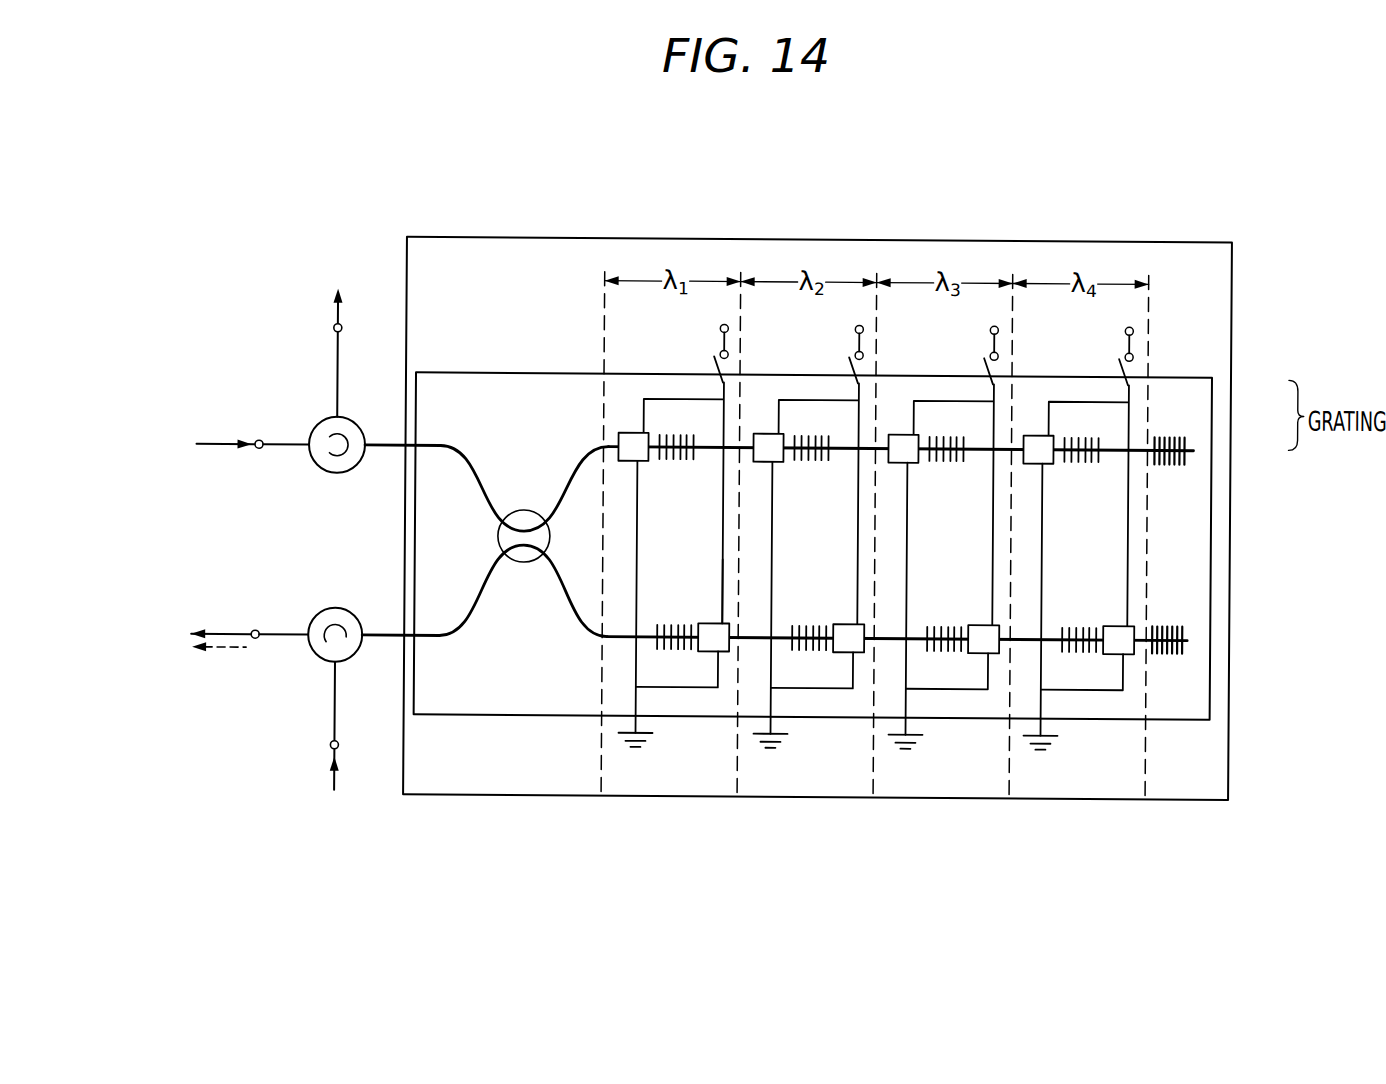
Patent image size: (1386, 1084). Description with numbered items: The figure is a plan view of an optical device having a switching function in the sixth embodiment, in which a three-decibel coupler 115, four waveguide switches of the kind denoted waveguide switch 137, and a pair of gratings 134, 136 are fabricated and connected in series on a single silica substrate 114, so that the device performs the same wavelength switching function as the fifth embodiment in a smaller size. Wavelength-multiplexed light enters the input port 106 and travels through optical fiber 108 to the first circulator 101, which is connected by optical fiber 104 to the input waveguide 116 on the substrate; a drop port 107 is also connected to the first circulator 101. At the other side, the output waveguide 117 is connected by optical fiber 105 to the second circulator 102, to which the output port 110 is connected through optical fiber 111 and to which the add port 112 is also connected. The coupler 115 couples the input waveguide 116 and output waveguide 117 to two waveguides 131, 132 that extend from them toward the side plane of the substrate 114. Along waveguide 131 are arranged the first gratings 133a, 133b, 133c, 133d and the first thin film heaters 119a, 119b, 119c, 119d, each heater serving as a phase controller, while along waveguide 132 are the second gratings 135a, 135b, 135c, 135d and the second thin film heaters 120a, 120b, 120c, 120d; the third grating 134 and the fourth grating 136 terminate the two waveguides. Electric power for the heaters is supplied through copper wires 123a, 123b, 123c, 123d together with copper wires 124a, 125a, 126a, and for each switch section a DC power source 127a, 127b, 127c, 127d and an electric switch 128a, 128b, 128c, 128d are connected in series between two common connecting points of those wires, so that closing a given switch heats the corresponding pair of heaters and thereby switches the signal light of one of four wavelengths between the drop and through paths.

The first circulator 101 is at (314, 457).
The second circulator 102 is at (322, 661).
The optical fiber 104 is at (383, 446).
The optical fiber 105 is at (373, 643).
The input port 106 is at (257, 444).
The drop port 107 is at (333, 329).
The optical fiber 108 is at (290, 446).
The output port 110 is at (255, 634).
The optical fiber 111 is at (288, 638).
The add port 112 is at (333, 751).
The SiO2 substrate 114 is at (515, 696).
The 3 dB coupler 115 is at (520, 511).
The input waveguide 116 is at (446, 446).
The output waveguide 117 is at (440, 641).
The first thin film heater 119a is at (708, 618).
The first thin film heater 119b is at (843, 618).
The first thin film heater 119c is at (978, 618).
The first thin film heater 119d is at (1113, 618).
The second thin film heater 120a is at (636, 463).
The second thin film heater 120b is at (771, 463).
The second thin film heater 120c is at (906, 463).
The second thin film heater 120d is at (1041, 463).
The copper wire 123a is at (661, 400).
The copper wire 123b is at (796, 400).
The copper wire 123c is at (931, 400).
The copper wire 123d is at (1066, 400).
The copper wire 124a is at (724, 587).
The copper wire 125a is at (637, 663).
The copper wire 126a is at (693, 691).
The DC power source 127a is at (722, 325).
The DC power source 127b is at (857, 325).
The DC power source 127c is at (992, 325).
The DC power source 127d is at (1127, 325).
The electric switch 128a is at (721, 352).
The electric switch 128b is at (856, 352).
The electric switch 128c is at (991, 352).
The electric switch 128d is at (1126, 352).
The waveguide 131 is at (581, 463).
The waveguide 132 is at (567, 611).
The first grating 133a is at (673, 620).
The first grating 133b is at (808, 620).
The first grating 133c is at (943, 620).
The first grating 133d is at (1078, 620).
The third grating 134 is at (1163, 622).
The second grating 135a is at (692, 461).
The second grating 135b is at (827, 461).
The second grating 135c is at (962, 461).
The second grating 135d is at (1097, 461).
The fourth grating 136 is at (1178, 430).
The waveguide switch 137 is at (573, 240).